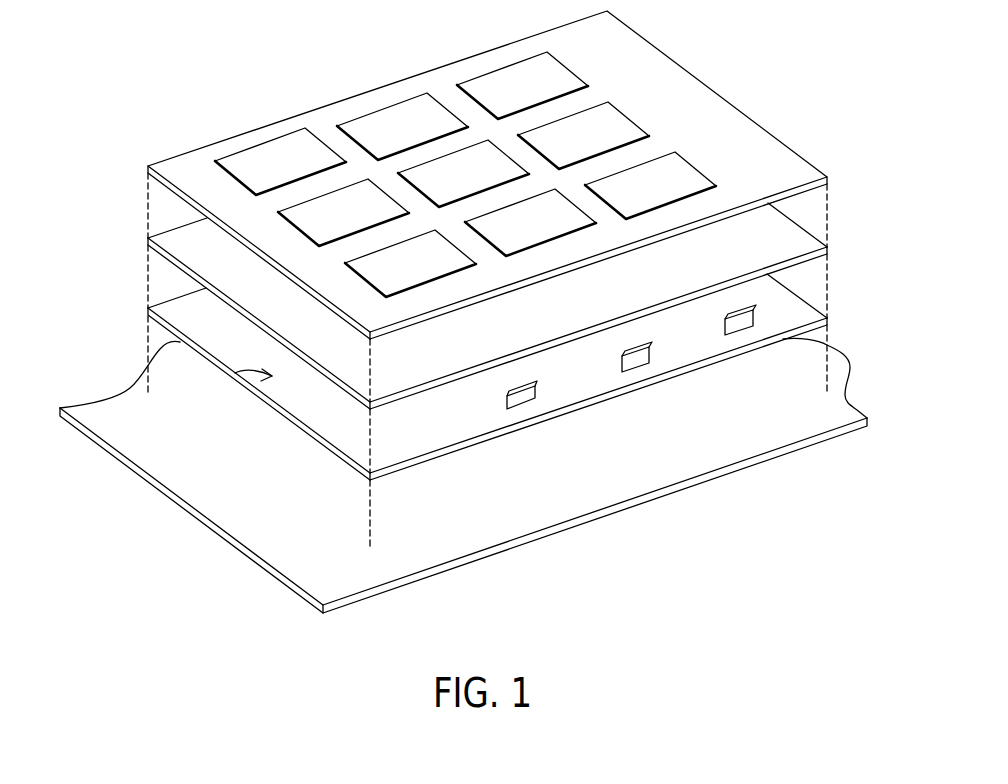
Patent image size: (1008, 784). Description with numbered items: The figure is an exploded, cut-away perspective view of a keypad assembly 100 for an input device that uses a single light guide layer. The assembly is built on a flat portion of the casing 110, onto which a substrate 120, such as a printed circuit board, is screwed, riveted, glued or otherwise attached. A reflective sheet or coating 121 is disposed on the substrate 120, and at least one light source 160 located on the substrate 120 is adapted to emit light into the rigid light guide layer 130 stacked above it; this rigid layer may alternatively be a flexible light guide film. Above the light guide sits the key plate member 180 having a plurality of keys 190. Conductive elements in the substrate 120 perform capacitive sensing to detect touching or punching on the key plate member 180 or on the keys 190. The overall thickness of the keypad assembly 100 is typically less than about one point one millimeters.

The keypad assembly 100 is at (791, 76).
The casing 110 is at (276, 480).
The substrate 120 is at (442, 441).
The reflective sheet or coating 121 is at (235, 373).
The rigid light guide layer 130 is at (492, 352).
The light source 160 is at (530, 400).
The key plate member 180 is at (761, 175).
The keys 190 is at (619, 122).